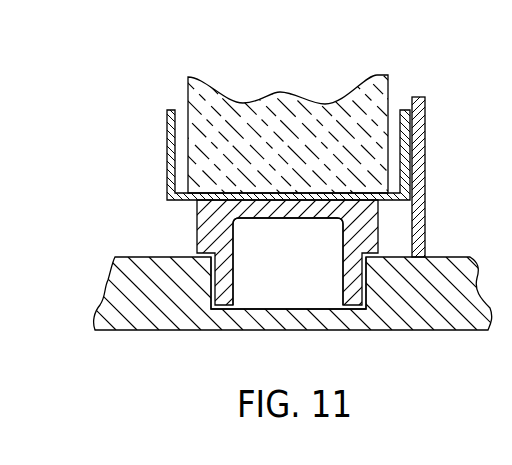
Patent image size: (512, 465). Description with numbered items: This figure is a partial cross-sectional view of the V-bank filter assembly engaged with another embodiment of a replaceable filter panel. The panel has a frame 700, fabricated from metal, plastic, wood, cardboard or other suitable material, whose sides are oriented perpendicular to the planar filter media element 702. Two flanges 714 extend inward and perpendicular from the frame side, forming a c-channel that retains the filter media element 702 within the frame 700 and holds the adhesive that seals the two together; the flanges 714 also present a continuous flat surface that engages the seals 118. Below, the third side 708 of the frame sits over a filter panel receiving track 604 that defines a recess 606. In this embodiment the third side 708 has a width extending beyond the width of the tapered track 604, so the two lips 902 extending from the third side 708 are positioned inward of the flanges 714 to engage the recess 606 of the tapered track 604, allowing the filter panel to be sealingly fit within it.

The frame 700 is at (267, 201).
The filter media element 702 is at (355, 130).
The flanges 714 is at (167, 142).
The seals 118 is at (427, 178).
The recess 606 is at (283, 251).
The third side 708 is at (310, 200).
The lips 902 is at (212, 293).
The filter panel receiving track 604 is at (438, 310).